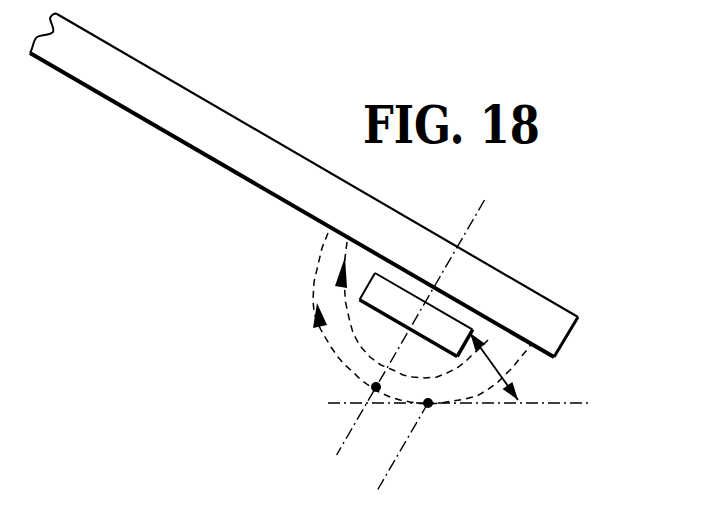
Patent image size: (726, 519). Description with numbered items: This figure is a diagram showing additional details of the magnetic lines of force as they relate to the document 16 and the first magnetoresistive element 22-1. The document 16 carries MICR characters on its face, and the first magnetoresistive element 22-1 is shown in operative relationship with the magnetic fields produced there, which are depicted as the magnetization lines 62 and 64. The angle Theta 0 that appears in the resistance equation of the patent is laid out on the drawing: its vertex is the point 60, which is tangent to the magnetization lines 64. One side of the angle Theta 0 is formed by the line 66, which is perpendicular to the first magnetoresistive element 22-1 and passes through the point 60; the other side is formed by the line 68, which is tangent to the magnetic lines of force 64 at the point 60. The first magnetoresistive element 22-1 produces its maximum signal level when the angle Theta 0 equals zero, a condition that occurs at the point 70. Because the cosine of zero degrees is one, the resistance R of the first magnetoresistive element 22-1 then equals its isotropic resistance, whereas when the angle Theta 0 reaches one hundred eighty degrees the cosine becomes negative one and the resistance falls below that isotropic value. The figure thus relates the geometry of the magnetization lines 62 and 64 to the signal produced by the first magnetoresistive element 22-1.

The document 16 is at (157, 82).
The first magnetoresistive element 22-1 is at (441, 318).
The magnetization line 62 is at (343, 294).
The magnetization line 64 is at (330, 342).
The point 70 is at (370, 387).
The point 60 is at (430, 405).
The line 66 is at (401, 452).
The line 68 is at (573, 403).
The angle theta 0 is at (493, 357).